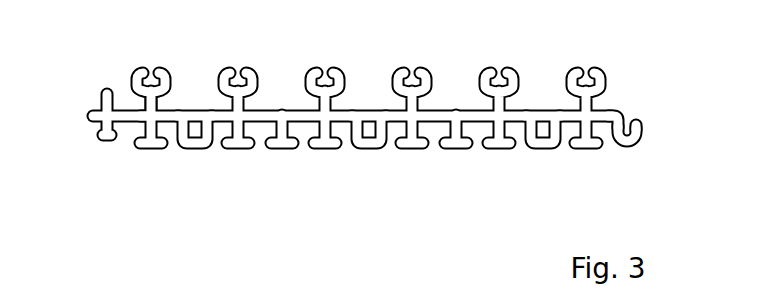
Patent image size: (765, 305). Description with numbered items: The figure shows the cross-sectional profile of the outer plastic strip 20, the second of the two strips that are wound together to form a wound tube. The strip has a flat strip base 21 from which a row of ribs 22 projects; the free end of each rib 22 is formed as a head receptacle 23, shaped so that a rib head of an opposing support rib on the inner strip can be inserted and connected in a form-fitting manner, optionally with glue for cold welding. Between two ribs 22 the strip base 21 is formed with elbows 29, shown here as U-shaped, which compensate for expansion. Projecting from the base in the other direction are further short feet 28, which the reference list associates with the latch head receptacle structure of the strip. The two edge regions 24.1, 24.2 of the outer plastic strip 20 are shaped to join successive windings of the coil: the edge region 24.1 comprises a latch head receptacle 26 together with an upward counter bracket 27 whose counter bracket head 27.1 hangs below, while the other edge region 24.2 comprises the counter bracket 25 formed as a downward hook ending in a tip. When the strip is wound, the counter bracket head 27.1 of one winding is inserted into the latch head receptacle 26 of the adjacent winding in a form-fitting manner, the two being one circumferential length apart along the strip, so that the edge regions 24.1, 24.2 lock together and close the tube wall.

The outer plastic strip 20 is at (145, 102).
The strip base 21 is at (142, 124).
The ribs 22 is at (157, 128).
The head receptacle 23 is at (153, 80).
The edge region of the outer plastic strip 24.1 is at (100, 116).
The edge region of the outer plastic strip 24.2 is at (618, 115).
The counter bracket 25 is at (642, 124).
The latch head receptacle 26 is at (628, 150).
The counter bracket 27 is at (103, 92).
The counter bracket head 27.1 is at (108, 142).
The latch head receptacle 28 is at (272, 150).
The elbows 29 is at (195, 150).